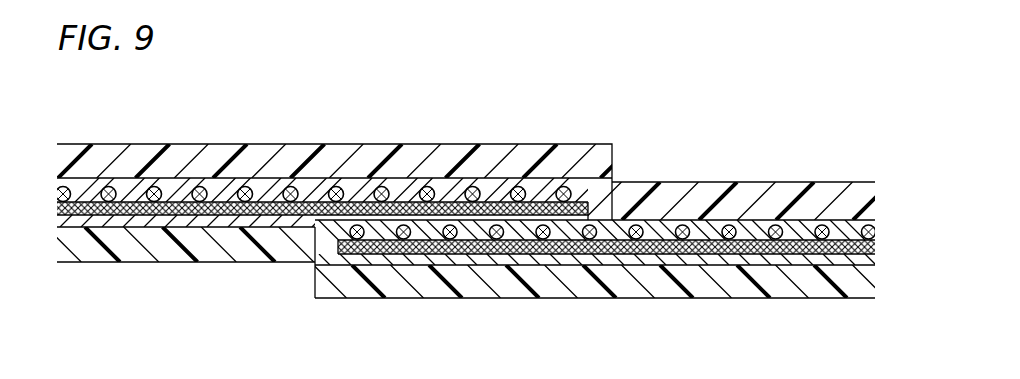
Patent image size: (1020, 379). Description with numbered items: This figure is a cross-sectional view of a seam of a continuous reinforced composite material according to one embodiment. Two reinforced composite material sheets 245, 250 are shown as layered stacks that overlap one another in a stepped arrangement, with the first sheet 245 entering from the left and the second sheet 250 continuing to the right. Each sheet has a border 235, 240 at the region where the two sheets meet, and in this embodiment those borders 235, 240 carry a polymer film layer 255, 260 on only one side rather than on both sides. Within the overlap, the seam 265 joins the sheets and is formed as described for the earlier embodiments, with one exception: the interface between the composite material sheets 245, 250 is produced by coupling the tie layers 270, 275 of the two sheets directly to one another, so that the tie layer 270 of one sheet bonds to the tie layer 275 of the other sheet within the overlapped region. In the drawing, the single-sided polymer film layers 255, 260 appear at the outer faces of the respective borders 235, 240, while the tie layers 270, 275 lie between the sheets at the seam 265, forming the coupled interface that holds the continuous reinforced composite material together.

The border 235 is at (472, 141).
The tie layer 275 is at (552, 195).
The polymer film layer 255 is at (612, 157).
The reinforced composite material sheet 245 is at (115, 266).
The reinforced composite material sheet 250 is at (820, 171).
The seam 265 is at (385, 223).
The tie layer 270 is at (568, 248).
The border 240 is at (495, 306).
The polymer film layer 260 is at (315, 282).